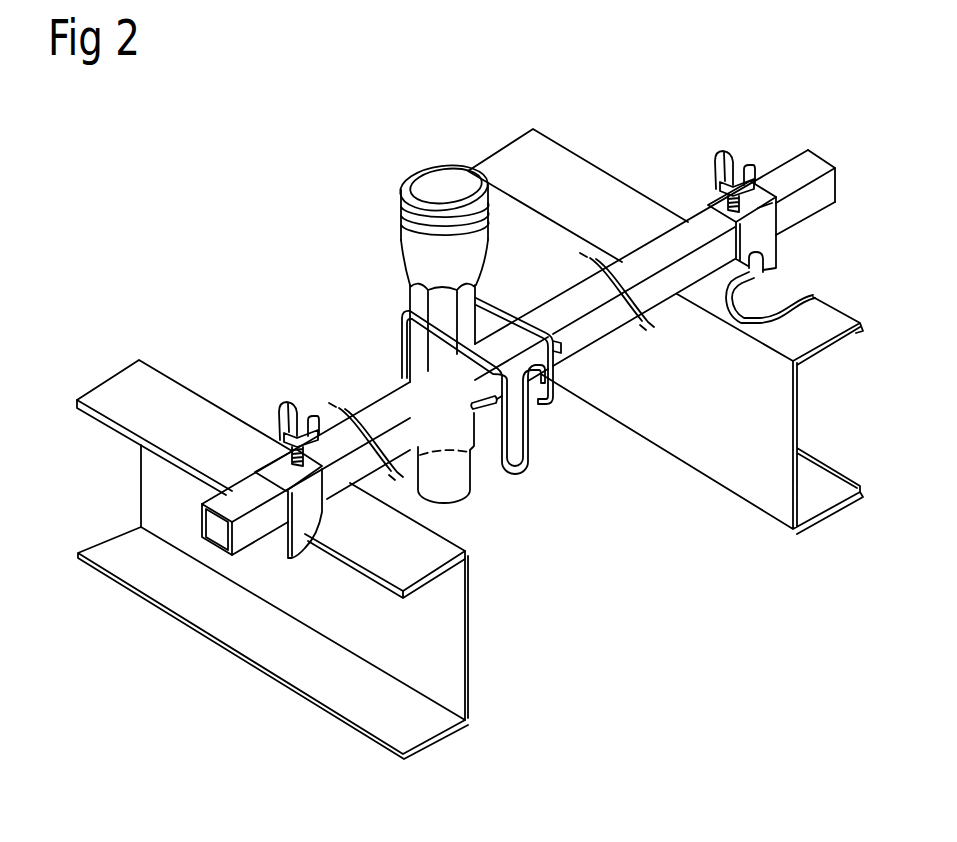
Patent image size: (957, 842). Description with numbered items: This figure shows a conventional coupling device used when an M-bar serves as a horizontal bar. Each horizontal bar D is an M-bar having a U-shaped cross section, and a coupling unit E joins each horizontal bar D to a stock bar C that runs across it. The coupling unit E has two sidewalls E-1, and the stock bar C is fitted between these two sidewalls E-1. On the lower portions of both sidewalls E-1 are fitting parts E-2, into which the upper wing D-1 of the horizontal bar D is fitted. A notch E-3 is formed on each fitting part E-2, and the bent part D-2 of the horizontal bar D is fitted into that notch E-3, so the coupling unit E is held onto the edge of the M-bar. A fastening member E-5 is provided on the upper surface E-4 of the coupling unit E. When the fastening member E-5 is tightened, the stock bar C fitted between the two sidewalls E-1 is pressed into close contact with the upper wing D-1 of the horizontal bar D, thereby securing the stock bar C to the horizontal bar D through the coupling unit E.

The stock bar C is at (593, 326).
The horizontal bar D is at (313, 559).
The upper wing D-1 is at (365, 557).
The bent part D-2 is at (387, 582).
The coupling unit E is at (259, 506).
The sidewall E-1 is at (292, 558).
The fitting part E-2 is at (776, 252).
The notch E-3 is at (776, 276).
The upper surface E-4 is at (284, 464).
The fastening member E-5 is at (290, 402).